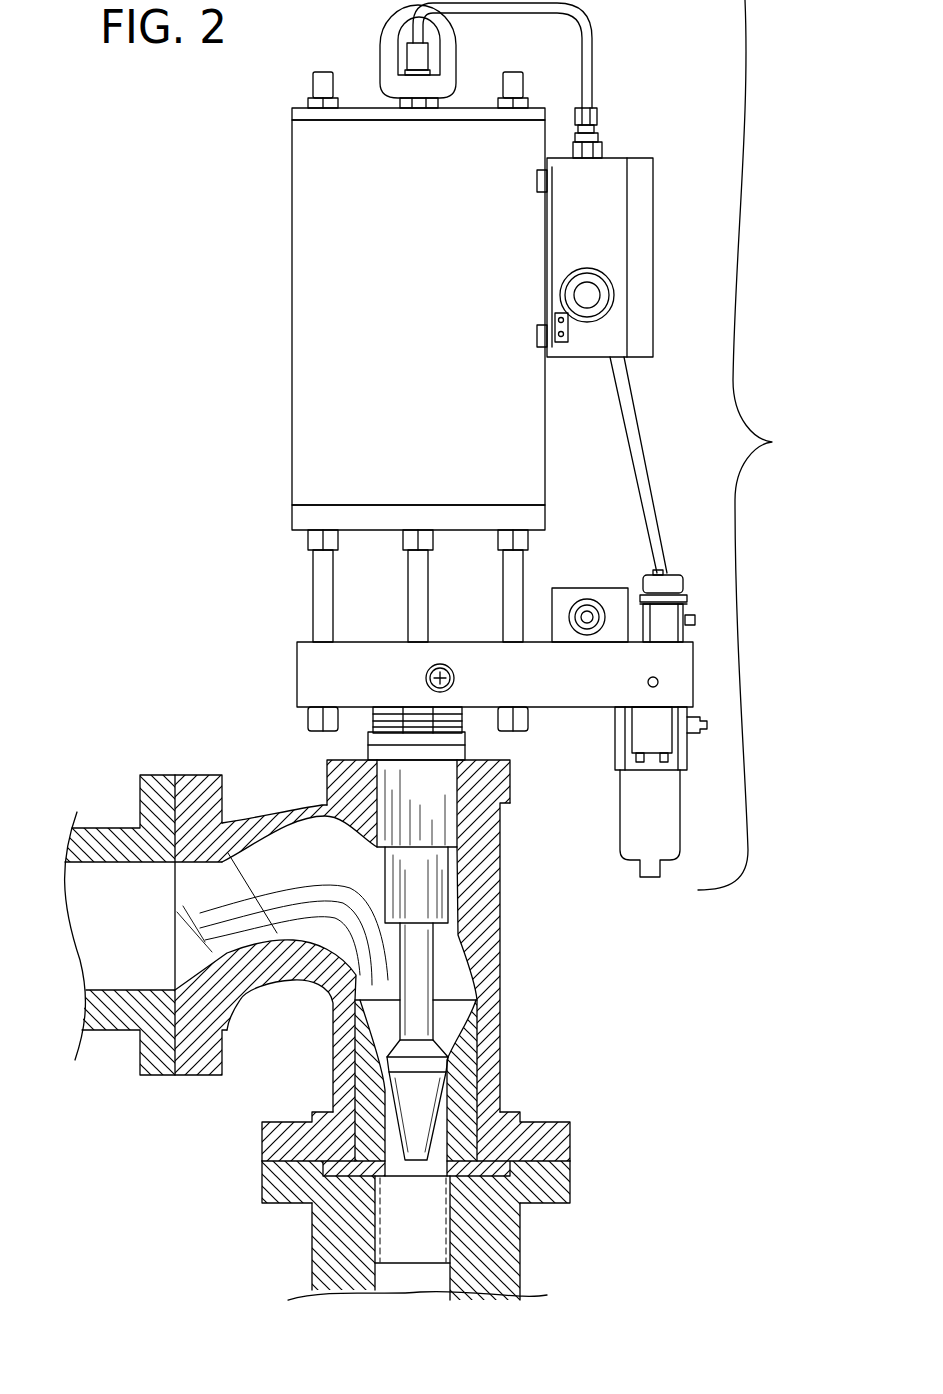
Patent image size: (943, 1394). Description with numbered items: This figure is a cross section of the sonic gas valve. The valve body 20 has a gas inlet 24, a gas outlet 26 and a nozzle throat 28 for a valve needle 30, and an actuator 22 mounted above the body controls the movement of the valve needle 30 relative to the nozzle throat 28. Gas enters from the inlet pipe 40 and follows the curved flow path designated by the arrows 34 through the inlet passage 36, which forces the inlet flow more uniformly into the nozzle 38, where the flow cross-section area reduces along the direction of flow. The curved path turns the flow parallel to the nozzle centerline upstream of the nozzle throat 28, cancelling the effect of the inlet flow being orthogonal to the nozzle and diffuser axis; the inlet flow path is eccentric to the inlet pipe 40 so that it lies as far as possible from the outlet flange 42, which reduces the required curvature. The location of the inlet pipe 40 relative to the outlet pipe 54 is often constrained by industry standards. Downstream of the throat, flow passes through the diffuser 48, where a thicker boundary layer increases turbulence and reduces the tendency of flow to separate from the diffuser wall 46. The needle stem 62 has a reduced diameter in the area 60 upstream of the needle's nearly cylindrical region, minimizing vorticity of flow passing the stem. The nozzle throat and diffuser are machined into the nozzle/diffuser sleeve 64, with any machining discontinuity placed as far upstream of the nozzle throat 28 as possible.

The valve body 20 is at (633, 927).
The actuator 22 is at (772, 442).
The gas inlet 24 is at (120, 935).
The gas outlet 26 is at (430, 1268).
The nozzle throat 28 is at (450, 1065).
The valve needle 30 is at (412, 1082).
The flow path arrows 34 is at (537, 990).
The inlet passage 36 is at (258, 869).
The nozzle 38 is at (353, 1012).
The inlet pipe 40 is at (100, 828).
The outlet flange 42 is at (570, 1140).
The diffuser wall 46 is at (399, 1175).
The diffuser 48 is at (445, 1205).
The outlet pipe 54 is at (570, 1186).
The reduced stem diameter area 60 is at (453, 940).
The needle stem 62 is at (413, 957).
The nozzle/diffuser sleeve 64 is at (470, 1167).